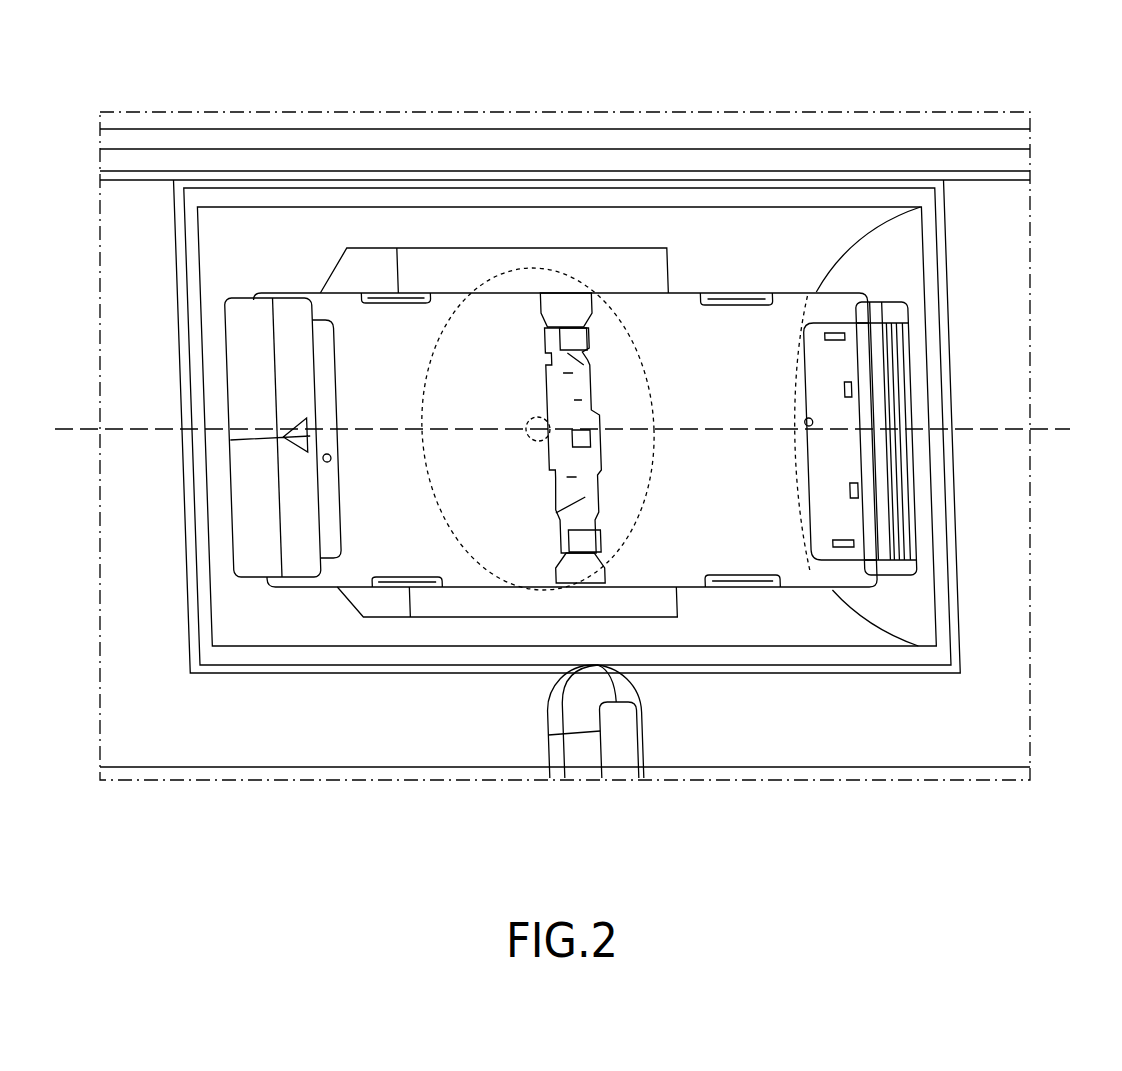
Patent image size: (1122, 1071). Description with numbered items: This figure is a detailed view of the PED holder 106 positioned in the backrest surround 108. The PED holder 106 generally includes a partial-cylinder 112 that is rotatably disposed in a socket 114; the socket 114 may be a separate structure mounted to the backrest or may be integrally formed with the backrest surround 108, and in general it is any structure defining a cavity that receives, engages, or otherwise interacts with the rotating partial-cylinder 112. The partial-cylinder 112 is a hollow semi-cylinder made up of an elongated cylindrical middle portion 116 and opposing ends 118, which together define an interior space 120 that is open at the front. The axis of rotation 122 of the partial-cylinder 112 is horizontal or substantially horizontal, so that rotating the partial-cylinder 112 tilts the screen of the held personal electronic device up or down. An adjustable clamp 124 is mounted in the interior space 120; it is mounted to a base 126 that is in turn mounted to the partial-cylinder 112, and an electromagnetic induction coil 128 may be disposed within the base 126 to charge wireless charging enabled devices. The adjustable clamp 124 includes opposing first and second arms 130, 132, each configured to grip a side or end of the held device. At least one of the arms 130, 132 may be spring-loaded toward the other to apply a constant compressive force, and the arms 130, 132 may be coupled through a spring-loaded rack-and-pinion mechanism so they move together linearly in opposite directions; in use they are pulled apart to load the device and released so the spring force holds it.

The PED holder 106 is at (792, 180).
The backrest surround 108 is at (1000, 272).
The partial-cylinder 112 is at (478, 197).
The socket 114 is at (398, 186).
The elongated cylindrical middle portion 116 is at (318, 222).
The opposing ends 118 is at (912, 250).
The interior space 120 is at (840, 228).
The axis of rotation 122 is at (1040, 428).
The adjustable clamp 124 is at (673, 317).
The base 126 is at (513, 253).
The electromagnetic induction coil 128 is at (582, 292).
The first arm 130 is at (358, 563).
The second arm 132 is at (795, 563).